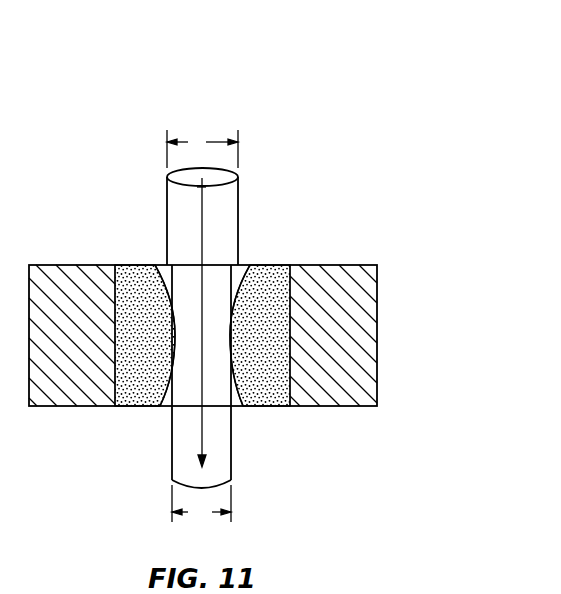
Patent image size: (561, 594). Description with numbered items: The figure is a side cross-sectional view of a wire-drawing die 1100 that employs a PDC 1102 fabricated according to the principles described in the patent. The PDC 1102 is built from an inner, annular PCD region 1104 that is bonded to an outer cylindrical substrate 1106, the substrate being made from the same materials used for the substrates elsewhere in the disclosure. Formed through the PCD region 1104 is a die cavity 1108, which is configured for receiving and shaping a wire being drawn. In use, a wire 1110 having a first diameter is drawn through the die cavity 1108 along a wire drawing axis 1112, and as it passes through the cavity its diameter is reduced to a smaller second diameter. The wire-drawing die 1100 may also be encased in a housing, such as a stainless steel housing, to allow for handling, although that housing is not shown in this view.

The wire-drawing die 1100 is at (348, 138).
The PDC 1102 is at (387, 305).
The inner annular PCD region 1104 is at (138, 283).
The outer cylindrical substrate 1106 is at (58, 283).
The die cavity 1108 is at (234, 406).
The wire 1110 is at (190, 362).
The wire drawing axis 1112 is at (203, 430).